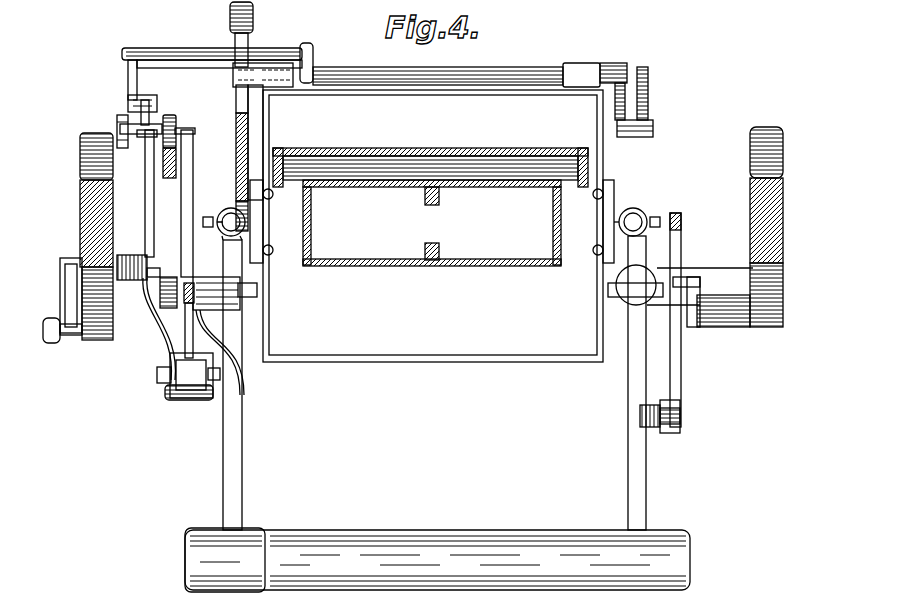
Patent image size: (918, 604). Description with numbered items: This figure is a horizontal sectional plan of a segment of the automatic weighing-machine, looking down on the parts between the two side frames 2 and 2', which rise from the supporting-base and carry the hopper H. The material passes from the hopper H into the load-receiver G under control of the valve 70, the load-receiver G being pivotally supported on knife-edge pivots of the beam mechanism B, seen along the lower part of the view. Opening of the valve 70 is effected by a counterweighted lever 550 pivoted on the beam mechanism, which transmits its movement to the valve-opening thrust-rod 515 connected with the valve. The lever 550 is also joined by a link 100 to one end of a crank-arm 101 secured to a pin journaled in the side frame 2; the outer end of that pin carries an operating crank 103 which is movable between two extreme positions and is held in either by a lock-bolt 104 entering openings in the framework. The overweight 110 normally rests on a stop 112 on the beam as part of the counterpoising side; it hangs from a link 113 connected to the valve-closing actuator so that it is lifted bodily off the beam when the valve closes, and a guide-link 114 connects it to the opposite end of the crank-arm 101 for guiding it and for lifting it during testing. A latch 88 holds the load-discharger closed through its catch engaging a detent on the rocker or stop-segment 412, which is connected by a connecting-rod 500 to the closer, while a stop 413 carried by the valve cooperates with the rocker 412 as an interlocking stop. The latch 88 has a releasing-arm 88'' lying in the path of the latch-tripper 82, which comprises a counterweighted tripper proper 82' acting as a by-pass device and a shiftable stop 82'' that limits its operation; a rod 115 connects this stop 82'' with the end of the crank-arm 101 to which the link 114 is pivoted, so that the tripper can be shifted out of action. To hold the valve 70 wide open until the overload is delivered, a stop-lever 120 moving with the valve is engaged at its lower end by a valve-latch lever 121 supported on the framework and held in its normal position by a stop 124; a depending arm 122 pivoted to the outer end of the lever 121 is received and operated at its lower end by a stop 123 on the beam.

The beam mechanism B is at (437, 546).
The load-receiver G is at (445, 365).
The hopper H is at (420, 266).
The valve 70 is at (434, 148).
The latch 88 is at (361, 44).
The releasing-arm 88'' is at (107, 80).
The tripper proper 82' is at (111, 101).
The shiftable stop 82'' is at (177, 112).
The rod or link 115 is at (162, 128).
The latch-tripper 82 is at (122, 143).
The rocker or stop-segment 412 is at (240, 101).
The stop 413 is at (249, 131).
The valve-opening thrust-rod 515 is at (176, 168).
The counterweighted lever 550 is at (232, 502).
The link 100 is at (147, 205).
The side frame 2 is at (81, 200).
The crank-arm 101 is at (117, 253).
The operating member or crank 103 is at (66, 300).
The lock-bolt 104 is at (80, 332).
The link 113 is at (188, 313).
The guide-link 114 is at (187, 314).
The stop 112 is at (220, 378).
The overweight 110 is at (174, 402).
The connecting-rod 500 is at (653, 109).
The side frame 2' is at (753, 227).
The valve-latch lever 121 is at (681, 366).
The stop-lever 120 is at (680, 222).
The stop 124 is at (678, 282).
The depending arm 122 is at (646, 426).
The stop 123 is at (660, 431).